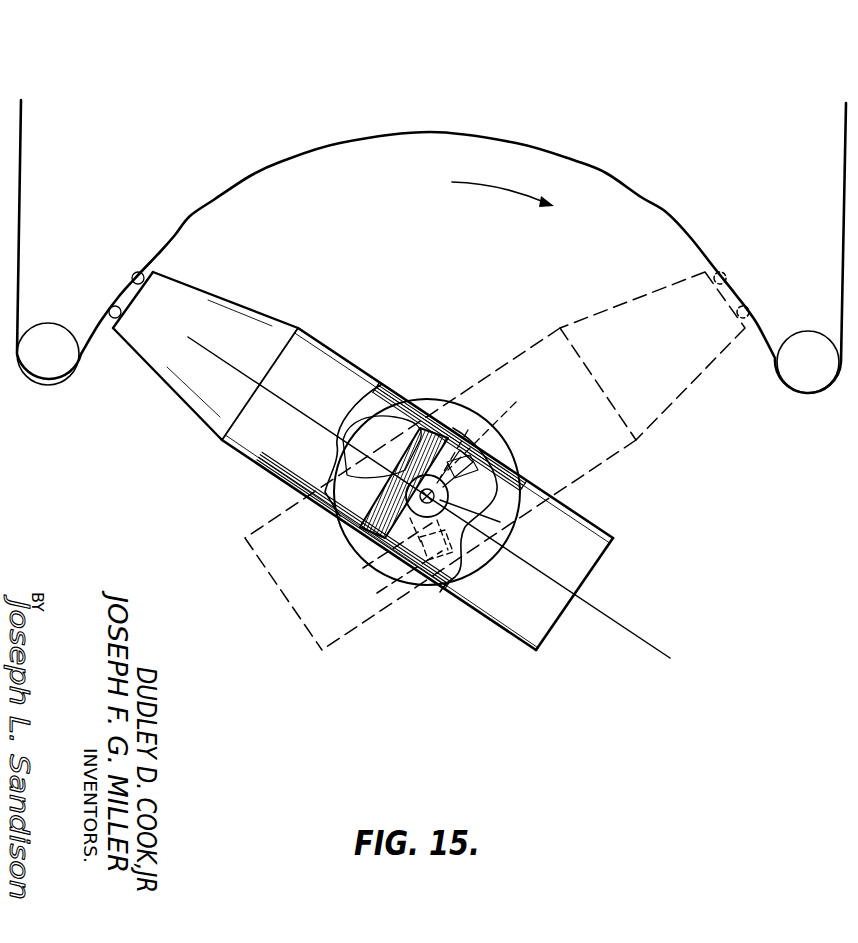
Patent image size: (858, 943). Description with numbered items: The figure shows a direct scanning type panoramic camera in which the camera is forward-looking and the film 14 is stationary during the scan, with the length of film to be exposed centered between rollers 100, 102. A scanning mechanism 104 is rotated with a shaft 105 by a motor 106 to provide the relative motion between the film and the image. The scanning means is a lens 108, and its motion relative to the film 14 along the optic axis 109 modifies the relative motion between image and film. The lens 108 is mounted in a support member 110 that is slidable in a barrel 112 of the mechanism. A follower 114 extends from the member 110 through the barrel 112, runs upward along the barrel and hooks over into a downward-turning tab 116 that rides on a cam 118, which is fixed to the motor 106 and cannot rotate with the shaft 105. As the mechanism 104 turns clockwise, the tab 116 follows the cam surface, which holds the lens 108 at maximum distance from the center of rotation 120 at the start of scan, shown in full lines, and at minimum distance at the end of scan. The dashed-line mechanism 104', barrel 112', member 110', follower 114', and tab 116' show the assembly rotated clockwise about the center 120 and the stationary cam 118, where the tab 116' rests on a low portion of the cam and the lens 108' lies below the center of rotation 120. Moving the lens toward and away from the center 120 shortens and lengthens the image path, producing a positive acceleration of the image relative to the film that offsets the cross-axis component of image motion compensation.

The film 14 is at (262, 172).
The roller 100 is at (60, 373).
The roller 102 is at (817, 384).
The scanning mechanism 104 is at (203, 395).
The scanning mechanism (rotated position) 104' is at (620, 356).
The shaft 105 is at (452, 500).
The motor 106 is at (495, 423).
The lens 108 is at (402, 475).
The lens (rotated position) 108' is at (362, 560).
The optic axis 109 is at (619, 626).
The support member 110 is at (354, 520).
The support member (rotated position) 110' is at (376, 588).
The barrel 112 is at (440, 489).
The barrel (rotated position) 112' is at (440, 503).
The follower 114 is at (414, 449).
The follower (rotated position) 114' is at (481, 429).
The tab 116 is at (351, 450).
The tab (rotated position) 116' is at (512, 416).
The cam 118 is at (463, 552).
The center of rotation 120 is at (500, 522).